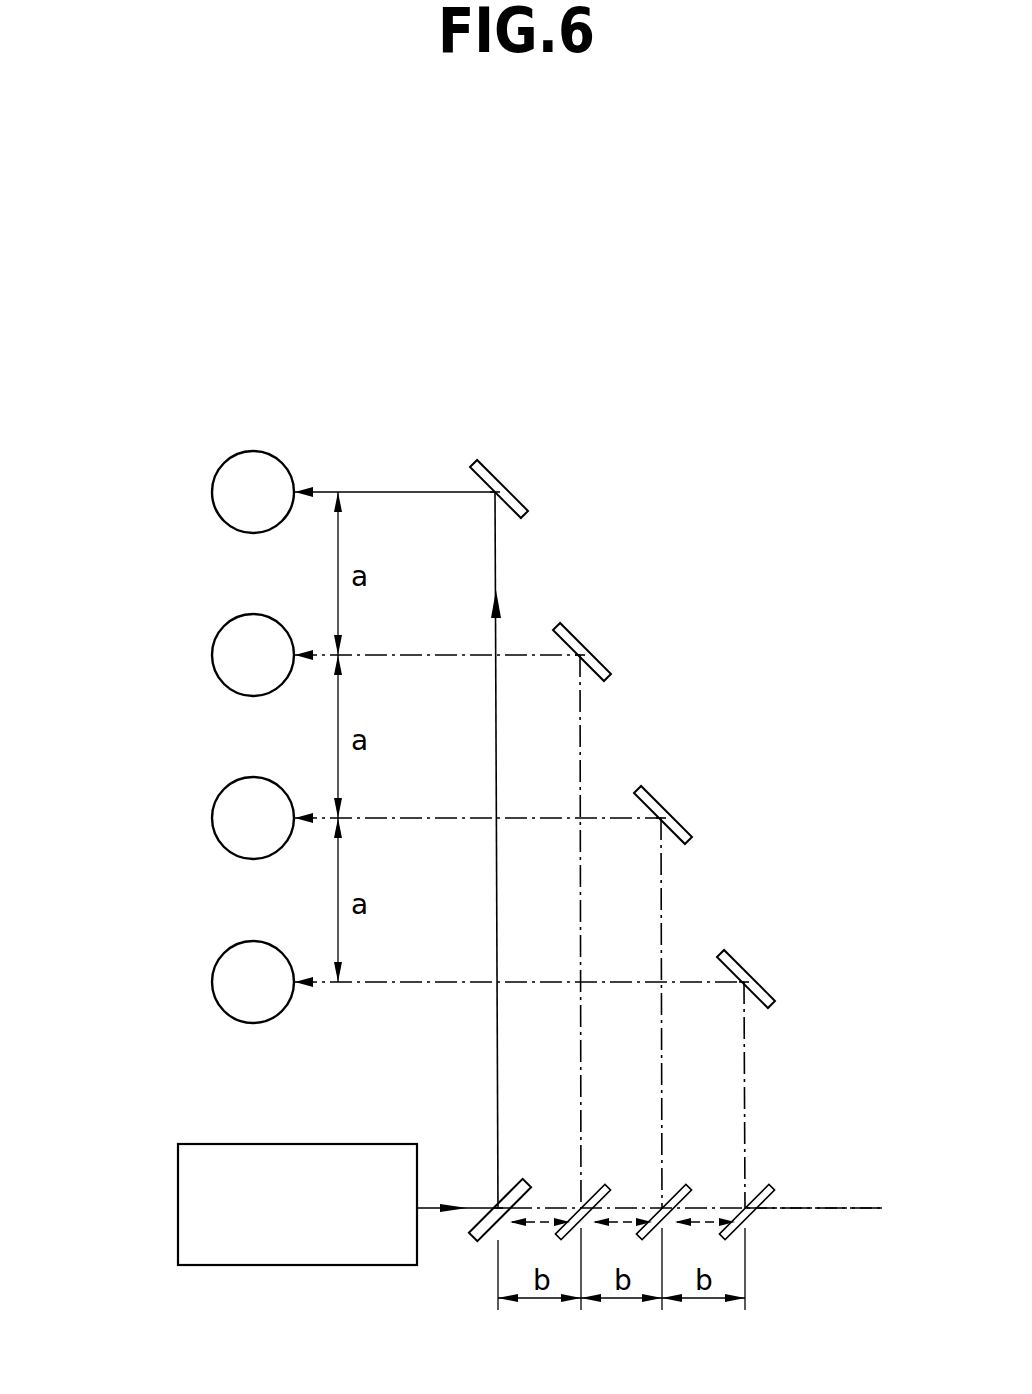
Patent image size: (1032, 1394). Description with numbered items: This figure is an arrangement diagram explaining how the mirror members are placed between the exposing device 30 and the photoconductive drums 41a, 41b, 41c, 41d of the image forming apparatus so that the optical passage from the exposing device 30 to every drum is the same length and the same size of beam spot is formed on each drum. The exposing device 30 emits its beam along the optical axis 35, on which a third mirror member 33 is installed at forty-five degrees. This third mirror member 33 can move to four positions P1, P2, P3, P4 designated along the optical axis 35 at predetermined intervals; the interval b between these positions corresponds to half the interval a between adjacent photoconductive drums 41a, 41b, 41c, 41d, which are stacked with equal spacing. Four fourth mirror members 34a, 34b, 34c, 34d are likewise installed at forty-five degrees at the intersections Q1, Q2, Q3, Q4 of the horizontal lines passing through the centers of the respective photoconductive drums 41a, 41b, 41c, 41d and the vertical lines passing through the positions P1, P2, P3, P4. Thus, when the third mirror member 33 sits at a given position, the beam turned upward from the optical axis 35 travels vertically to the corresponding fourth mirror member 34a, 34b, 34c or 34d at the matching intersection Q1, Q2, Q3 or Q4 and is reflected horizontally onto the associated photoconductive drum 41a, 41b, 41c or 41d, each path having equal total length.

The exposing device 30 is at (165, 1165).
The third mirror member 33 is at (482, 1240).
The fourth mirror member 34a is at (500, 485).
The fourth mirror member 34b is at (606, 660).
The fourth mirror member 34c is at (687, 830).
The fourth mirror member 34d is at (766, 998).
The optical axis 35 is at (838, 1208).
The photoconductive drum 41a is at (225, 472).
The photoconductive drum 41b is at (226, 638).
The photoconductive drum 41c is at (228, 800).
The photoconductive drum 41d is at (228, 962).
The position P1 is at (498, 1207).
The position P2 is at (581, 1207).
The position P3 is at (662, 1207).
The position P4 is at (742, 1207).
The intersection Q1 is at (493, 494).
The intersection Q2 is at (575, 657).
The intersection Q3 is at (659, 821).
The intersection Q4 is at (742, 987).